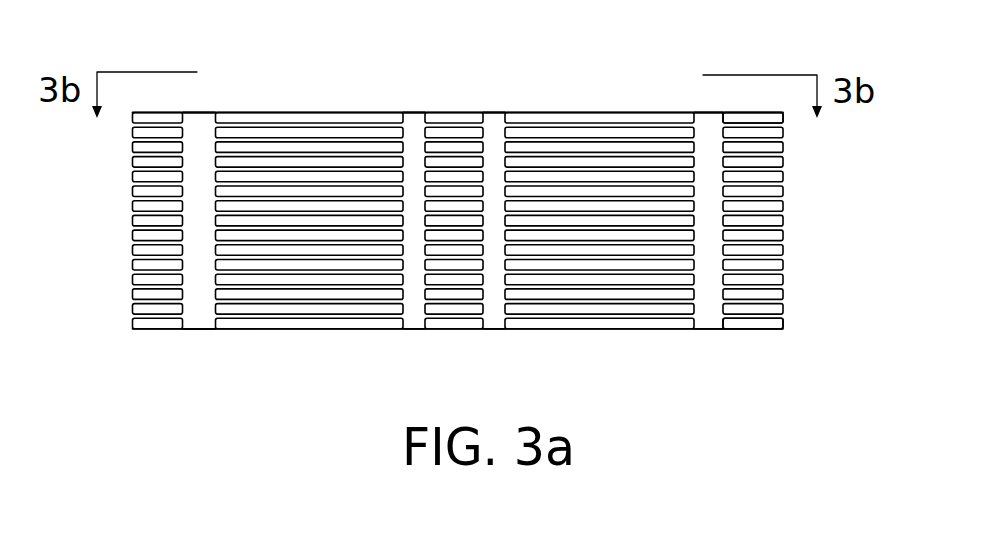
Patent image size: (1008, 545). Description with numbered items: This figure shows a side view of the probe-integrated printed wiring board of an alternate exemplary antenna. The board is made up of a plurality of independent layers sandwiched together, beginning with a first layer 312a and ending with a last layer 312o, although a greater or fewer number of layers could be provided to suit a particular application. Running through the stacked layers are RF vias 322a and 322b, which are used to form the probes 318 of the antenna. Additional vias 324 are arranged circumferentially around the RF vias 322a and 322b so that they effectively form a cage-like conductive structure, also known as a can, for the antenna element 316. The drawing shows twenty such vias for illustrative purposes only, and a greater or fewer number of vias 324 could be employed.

The layer 312a is at (775, 122).
The layer 312o is at (767, 323).
The antenna element 316 is at (203, 130).
The probes 318 is at (495, 310).
The RF via 322a is at (413, 130).
The RF via 322b is at (494, 130).
The vias 324 is at (196, 313).